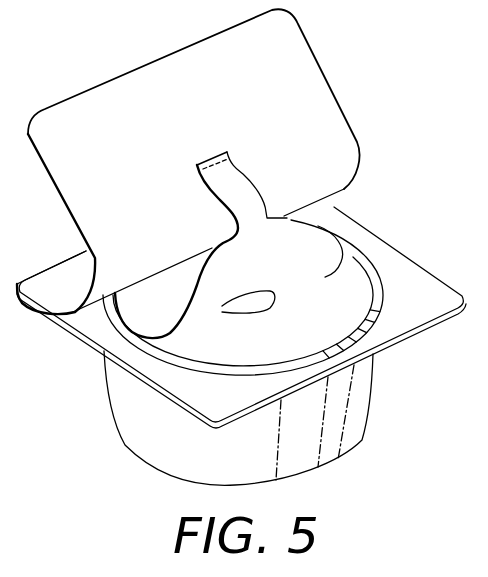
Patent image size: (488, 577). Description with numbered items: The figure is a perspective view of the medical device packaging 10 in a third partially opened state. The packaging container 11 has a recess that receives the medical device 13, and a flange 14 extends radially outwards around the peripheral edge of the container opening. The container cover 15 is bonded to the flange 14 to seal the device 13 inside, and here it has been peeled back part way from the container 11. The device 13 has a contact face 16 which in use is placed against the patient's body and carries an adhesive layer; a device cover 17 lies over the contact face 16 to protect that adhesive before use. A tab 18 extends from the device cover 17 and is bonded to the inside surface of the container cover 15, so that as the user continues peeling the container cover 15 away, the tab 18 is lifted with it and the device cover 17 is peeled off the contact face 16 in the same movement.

The medical device packaging 10 is at (409, 113).
The packaging container 11 is at (349, 436).
The medical device 13 is at (152, 354).
The flange 14 is at (432, 321).
The container cover 15 is at (302, 55).
The contact face 16 is at (356, 284).
The device cover 17 is at (326, 226).
The tab 18 is at (230, 170).